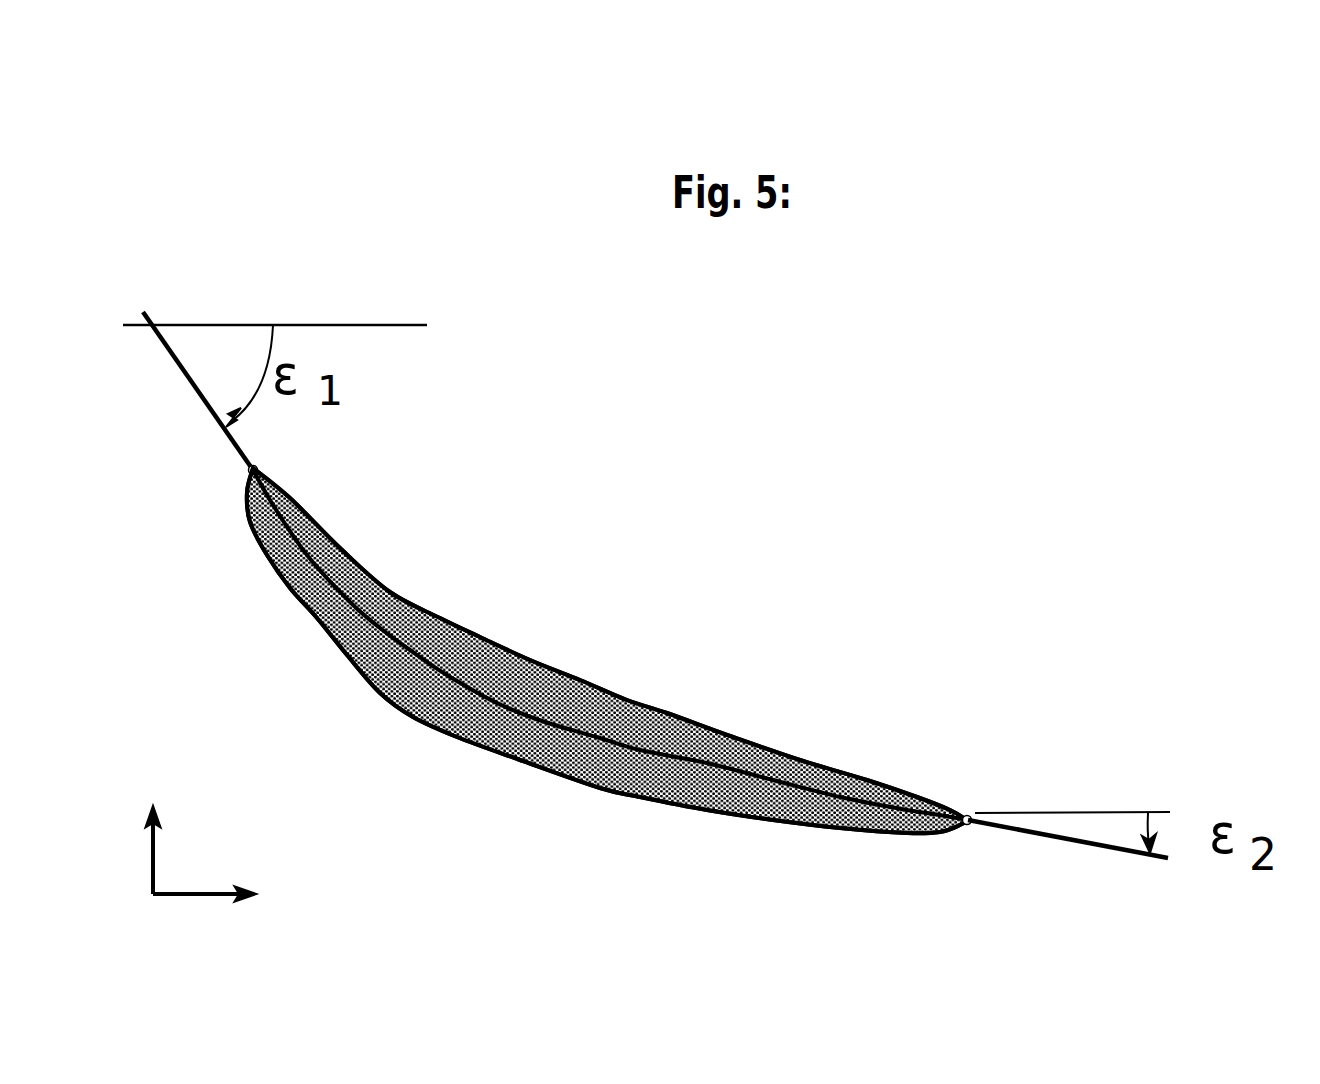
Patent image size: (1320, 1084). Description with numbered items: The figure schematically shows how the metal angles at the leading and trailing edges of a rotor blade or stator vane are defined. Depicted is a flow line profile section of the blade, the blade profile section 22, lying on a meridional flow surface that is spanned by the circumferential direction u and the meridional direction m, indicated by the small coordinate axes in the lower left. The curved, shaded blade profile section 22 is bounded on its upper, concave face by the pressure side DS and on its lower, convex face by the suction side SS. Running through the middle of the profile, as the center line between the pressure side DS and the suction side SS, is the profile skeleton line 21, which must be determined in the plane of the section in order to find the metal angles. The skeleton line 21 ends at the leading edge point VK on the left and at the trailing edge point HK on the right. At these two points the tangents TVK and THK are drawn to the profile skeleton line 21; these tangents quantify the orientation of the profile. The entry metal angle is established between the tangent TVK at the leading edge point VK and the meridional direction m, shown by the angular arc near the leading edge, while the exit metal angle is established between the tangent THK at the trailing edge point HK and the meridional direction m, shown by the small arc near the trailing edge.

The profile skeleton line 21 is at (410, 643).
The blade profile section 22 is at (680, 736).
The leading edge point VK is at (275, 451).
The trailing edge point HK is at (994, 800).
The tangent at the leading edge point TVK is at (197, 391).
The tangent at the trailing edge point THK is at (1068, 858).
The pressure side DS is at (610, 644).
The suction side SS is at (607, 650).
The circumferential direction u is at (154, 825).
The meridional direction m is at (233, 890).